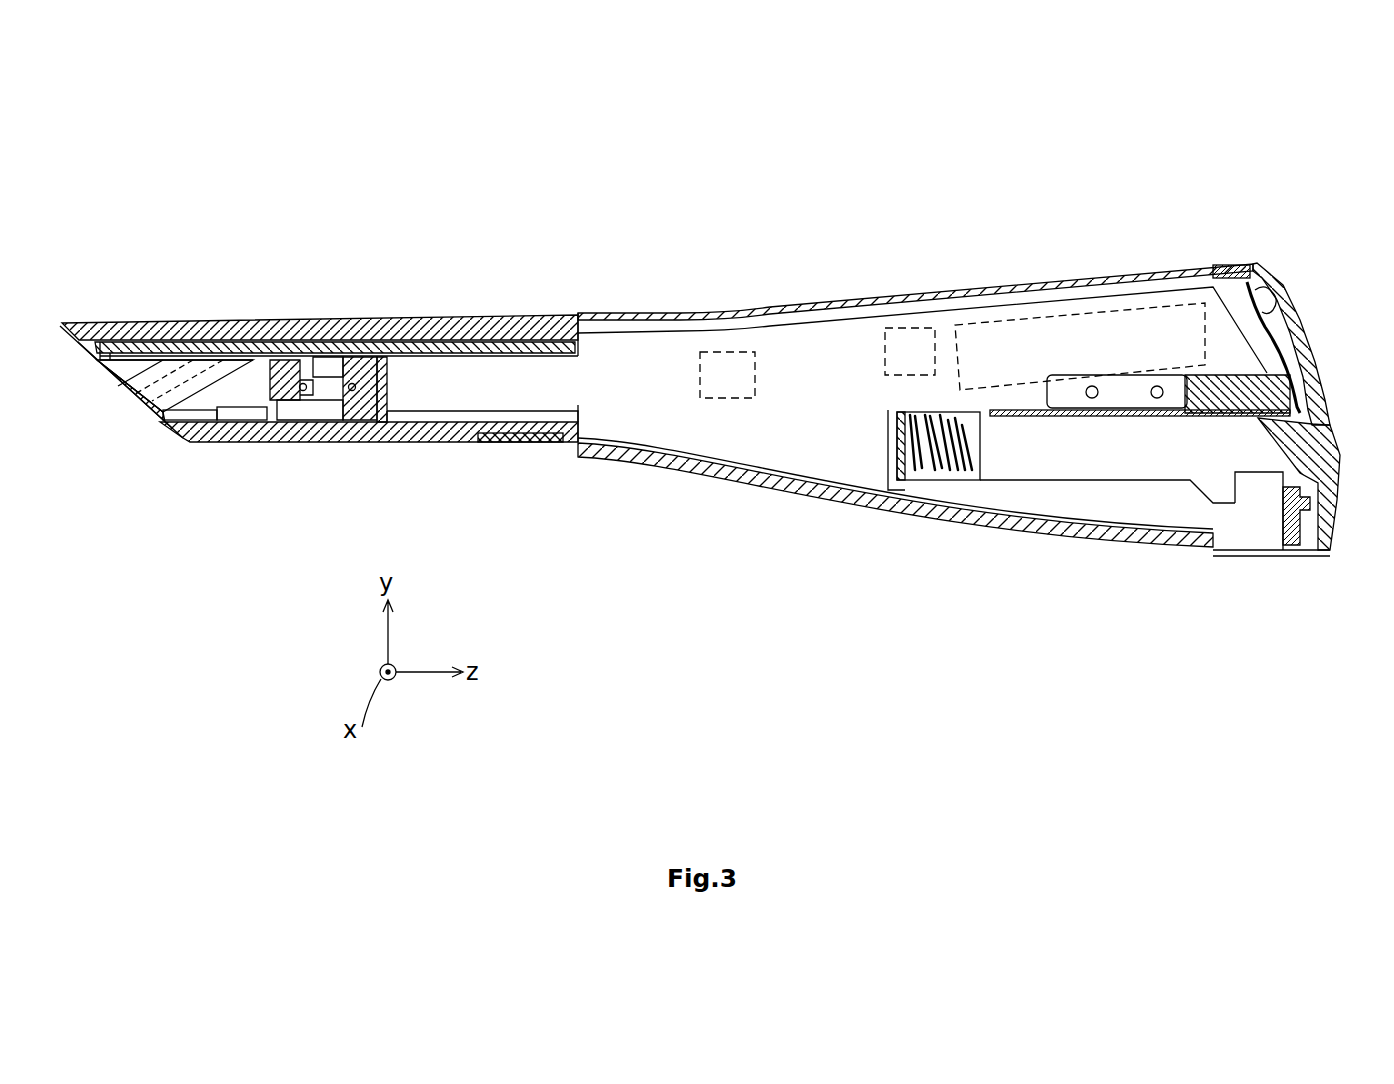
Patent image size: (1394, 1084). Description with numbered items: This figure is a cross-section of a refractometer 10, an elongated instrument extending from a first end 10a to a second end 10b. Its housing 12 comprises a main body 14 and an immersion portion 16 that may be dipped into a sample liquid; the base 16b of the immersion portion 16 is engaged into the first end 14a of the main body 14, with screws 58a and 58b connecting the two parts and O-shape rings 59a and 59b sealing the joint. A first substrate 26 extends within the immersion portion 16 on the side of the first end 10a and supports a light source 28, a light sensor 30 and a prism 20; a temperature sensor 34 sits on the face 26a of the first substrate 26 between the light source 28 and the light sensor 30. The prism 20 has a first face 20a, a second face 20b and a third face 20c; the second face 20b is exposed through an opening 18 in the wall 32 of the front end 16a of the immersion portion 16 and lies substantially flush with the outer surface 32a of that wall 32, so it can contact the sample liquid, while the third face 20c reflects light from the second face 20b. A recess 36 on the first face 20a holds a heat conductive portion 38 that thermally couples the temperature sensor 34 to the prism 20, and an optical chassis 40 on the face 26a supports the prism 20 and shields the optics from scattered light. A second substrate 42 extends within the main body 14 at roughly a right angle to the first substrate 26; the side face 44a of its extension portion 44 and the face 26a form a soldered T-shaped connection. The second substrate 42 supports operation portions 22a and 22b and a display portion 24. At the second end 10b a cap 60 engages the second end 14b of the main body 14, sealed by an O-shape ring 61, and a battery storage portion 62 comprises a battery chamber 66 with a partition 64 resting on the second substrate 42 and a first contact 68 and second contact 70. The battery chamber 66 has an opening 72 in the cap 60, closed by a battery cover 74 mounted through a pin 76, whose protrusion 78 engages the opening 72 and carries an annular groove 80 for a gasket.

The refractometer 10 is at (823, 218).
The first end 10a is at (90, 322).
The second end 10b is at (1260, 263).
The housing 12 is at (536, 298).
The main body 14 is at (955, 287).
The first end of the main body 14a is at (407, 313).
The second end of the main body 14b is at (1163, 282).
The immersion portion 16 is at (217, 313).
The front end of the immersion portion 16a is at (70, 322).
The base of the immersion portion 16b is at (487, 315).
The opening 18 is at (145, 436).
The prism 20 is at (112, 392).
The first face of the prism 20a is at (193, 318).
The second face of the prism 20b is at (105, 363).
The third face of the prism 20c is at (203, 442).
The operation portion 22a is at (725, 352).
The operation portion 22b is at (905, 328).
The display portion 24 is at (1078, 325).
The first substrate 26 is at (293, 313).
The face of the first substrate 26a is at (447, 323).
The light source 28 is at (103, 340).
The light sensor 30 is at (245, 340).
The wall 32 is at (160, 425).
The outer surface of the wall 32a is at (96, 362).
The temperature sensor 34 is at (135, 318).
The recess 36 is at (167, 340).
The heat conductive portion 38 is at (135, 402).
The optical chassis 40 is at (357, 442).
The second substrate 42 is at (770, 470).
The extension portion 44 is at (457, 442).
The side face of the extension portion 44a is at (415, 442).
The screw 58a is at (582, 356).
The screw 58b is at (582, 412).
The O-shape ring 59a is at (350, 313).
The O-shape ring 59b is at (380, 315).
The cap 60 is at (1313, 387).
The O-shape ring 61 is at (1228, 264).
The battery storage portion 62 is at (1017, 386).
The partition 64 is at (990, 480).
The battery chamber 66 is at (1113, 462).
The first contact 68 is at (940, 472).
The second contact 70 is at (1267, 520).
The opening 72 is at (1325, 427).
The battery cover 74 is at (1327, 460).
The pin 76 is at (1274, 289).
The protrusion 78 is at (1223, 497).
The annular groove 80 is at (1308, 473).